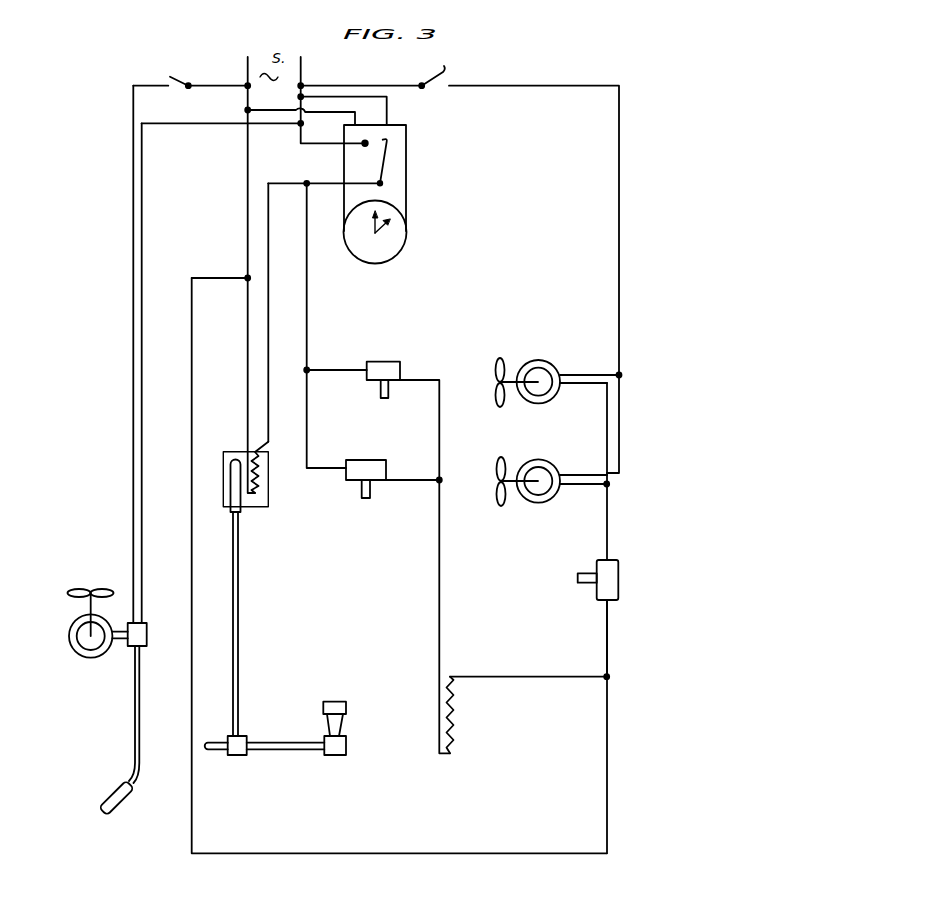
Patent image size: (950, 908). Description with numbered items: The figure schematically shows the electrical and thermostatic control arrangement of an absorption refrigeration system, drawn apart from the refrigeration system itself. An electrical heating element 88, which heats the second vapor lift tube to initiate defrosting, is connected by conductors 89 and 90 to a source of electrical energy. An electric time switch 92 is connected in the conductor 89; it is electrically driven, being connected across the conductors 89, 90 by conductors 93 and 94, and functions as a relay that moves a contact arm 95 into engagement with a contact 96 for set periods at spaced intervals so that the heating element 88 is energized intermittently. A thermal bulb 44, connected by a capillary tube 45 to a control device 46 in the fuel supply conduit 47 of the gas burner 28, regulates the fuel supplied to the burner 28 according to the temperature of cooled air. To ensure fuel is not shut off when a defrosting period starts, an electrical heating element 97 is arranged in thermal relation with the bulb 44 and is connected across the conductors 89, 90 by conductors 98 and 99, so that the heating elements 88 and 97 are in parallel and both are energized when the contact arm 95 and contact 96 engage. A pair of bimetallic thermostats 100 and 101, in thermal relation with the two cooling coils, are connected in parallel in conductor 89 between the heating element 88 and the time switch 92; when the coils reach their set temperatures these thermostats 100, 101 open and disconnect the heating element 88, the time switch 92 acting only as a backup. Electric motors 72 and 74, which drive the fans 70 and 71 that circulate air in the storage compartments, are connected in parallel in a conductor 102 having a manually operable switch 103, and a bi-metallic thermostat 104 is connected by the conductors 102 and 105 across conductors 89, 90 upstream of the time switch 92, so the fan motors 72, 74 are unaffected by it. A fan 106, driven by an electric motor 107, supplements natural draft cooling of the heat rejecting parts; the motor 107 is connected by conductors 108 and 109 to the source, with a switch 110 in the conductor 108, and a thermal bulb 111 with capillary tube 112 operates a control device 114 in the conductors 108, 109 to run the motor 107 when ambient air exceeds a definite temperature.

The gas burner 28 is at (339, 755).
The thermal bulb 44 is at (230, 502).
The capillary tube 45 is at (239, 573).
The control device 46 is at (237, 755).
The fuel supply conduit 47 is at (285, 750).
The fan 70 is at (500, 358).
The fan 71 is at (500, 505).
The electric motor 72 is at (550, 362).
The electric motor 74 is at (543, 504).
The electrical heating element 88 is at (454, 713).
The conductor 89 is at (302, 67).
The conductor 90 is at (247, 67).
The electric time switch 92 is at (406, 204).
The conductor 93 is at (407, 109).
The conductor 94 is at (355, 124).
The contact arm 95 is at (390, 169).
The contact 96 is at (362, 157).
The electrical heating element 97 is at (262, 487).
The conductor 98 is at (268, 412).
The conductor 99 is at (247, 384).
The bimetallic thermostat 100 is at (388, 363).
The bimetallic thermostat 101 is at (375, 475).
The conductor 102 is at (622, 257).
The manually operable switch 103 is at (440, 72).
The bi-metallic thermostat 104 is at (620, 590).
The conductor 105 is at (608, 648).
The fan 106 is at (100, 588).
The electric motor 107 is at (70, 646).
The conductor 108 is at (133, 454).
The conductor 109 is at (141, 493).
The switch 110 is at (158, 72).
The thermal bulb 111 is at (108, 795).
The capillary tube 112 is at (134, 719).
The control device 114 is at (146, 637).